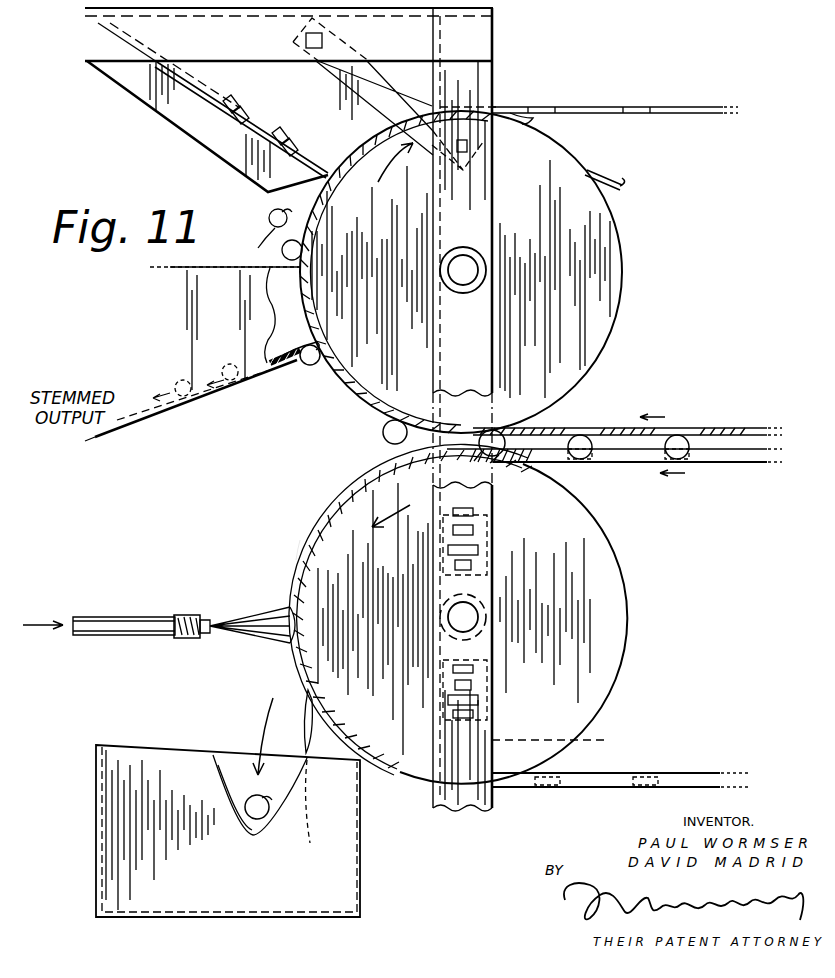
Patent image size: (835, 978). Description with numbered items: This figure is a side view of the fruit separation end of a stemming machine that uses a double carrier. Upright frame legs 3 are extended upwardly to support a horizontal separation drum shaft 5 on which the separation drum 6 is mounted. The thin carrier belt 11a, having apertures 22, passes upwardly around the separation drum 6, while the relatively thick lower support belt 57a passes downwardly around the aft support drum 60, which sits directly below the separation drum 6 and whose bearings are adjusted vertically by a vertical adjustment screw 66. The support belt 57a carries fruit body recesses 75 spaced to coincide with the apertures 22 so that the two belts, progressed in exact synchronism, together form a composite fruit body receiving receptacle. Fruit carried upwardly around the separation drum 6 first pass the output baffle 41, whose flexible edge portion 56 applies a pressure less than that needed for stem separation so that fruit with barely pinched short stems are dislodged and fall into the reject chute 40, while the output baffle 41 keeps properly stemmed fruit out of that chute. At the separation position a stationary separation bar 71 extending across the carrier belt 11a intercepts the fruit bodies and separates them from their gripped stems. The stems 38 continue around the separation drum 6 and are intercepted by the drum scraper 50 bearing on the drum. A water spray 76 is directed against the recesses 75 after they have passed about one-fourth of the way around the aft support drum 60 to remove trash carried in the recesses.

The frame legs 3 is at (493, 88).
The separation drum shaft 5 is at (470, 260).
The separation drum 6 is at (610, 258).
The carrier belt 11a is at (728, 428).
The apertures 22 is at (680, 435).
The stems 38 is at (590, 435).
The reject chute 40 is at (207, 803).
The output baffle 41 is at (268, 365).
The drum scraper 50 is at (620, 190).
The flexible edge portion 56 is at (305, 368).
The lower support belt 57a is at (720, 462).
The aft support drum 60 is at (597, 565).
The vertical adjustment screw 66 is at (563, 740).
The separation bar 71 is at (340, 162).
The fruit body recesses 75 is at (313, 545).
The water spray 76 is at (232, 615).